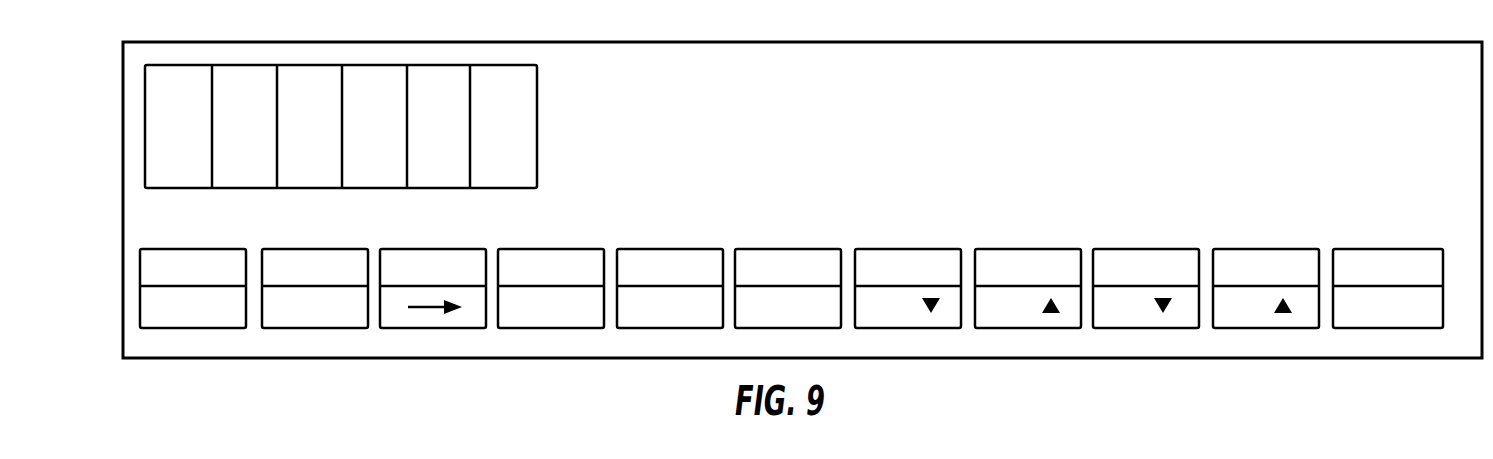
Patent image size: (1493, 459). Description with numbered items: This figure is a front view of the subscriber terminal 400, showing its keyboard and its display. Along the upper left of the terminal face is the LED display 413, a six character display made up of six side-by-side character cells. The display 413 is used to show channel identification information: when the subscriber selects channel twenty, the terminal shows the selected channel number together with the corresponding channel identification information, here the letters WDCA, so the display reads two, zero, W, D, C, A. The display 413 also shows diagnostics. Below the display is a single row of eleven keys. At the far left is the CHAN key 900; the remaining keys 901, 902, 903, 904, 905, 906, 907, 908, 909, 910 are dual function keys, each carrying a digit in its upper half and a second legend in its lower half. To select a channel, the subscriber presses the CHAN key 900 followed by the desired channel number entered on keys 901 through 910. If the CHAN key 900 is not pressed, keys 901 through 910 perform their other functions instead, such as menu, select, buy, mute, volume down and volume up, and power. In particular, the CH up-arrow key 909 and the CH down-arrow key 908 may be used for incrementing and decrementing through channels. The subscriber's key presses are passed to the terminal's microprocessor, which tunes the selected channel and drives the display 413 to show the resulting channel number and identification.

The subscriber terminal 400 is at (1053, 42).
The LED display 413 is at (537, 143).
The CHAN key 900 is at (222, 249).
The dual function key 901 is at (344, 249).
The dual function key 902 is at (462, 249).
The dual function key 903 is at (580, 249).
The dual function key 904 is at (699, 249).
The dual function key 905 is at (817, 249).
The dual function key 906 is at (937, 249).
The dual function key 907 is at (1057, 249).
The dual function key 908 is at (1175, 249).
The dual function key 909 is at (1295, 249).
The dual function key 910 is at (1415, 249).